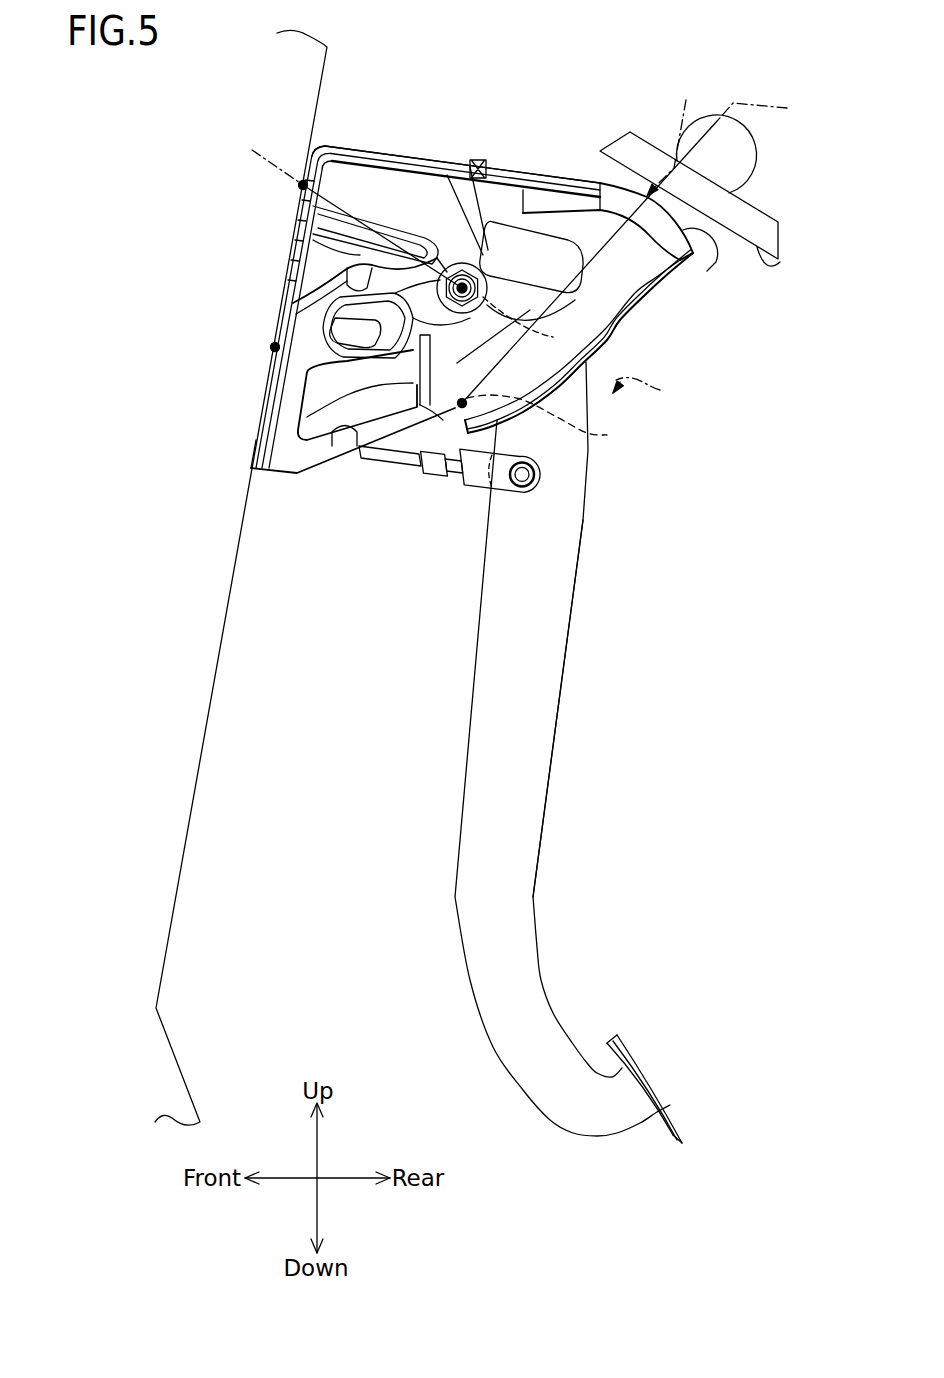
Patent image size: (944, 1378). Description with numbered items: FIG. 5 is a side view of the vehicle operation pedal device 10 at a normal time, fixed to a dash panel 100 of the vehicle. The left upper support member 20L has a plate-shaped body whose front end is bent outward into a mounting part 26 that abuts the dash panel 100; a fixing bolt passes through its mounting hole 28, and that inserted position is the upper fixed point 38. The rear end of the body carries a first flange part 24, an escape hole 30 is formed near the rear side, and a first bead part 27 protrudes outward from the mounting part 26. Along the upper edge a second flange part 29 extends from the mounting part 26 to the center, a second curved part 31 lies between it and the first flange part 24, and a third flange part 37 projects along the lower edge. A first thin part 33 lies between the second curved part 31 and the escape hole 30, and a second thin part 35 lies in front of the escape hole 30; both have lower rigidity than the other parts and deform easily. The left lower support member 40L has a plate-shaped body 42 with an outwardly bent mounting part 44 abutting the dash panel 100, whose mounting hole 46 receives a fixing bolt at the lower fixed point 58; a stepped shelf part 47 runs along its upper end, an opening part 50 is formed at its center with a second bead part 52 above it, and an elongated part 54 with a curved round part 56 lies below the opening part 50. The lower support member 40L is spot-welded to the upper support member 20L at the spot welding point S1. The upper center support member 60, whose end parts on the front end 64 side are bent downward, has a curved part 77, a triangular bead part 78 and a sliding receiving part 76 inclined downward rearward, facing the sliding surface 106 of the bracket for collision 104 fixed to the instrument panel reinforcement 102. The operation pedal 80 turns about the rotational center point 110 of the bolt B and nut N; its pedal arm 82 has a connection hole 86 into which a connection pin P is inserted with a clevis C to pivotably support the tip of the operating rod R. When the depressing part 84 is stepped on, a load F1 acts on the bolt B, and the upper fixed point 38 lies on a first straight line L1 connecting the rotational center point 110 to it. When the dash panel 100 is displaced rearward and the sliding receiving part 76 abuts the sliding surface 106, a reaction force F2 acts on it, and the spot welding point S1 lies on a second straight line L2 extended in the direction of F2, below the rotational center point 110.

The vehicle operation pedal device 10 is at (606, 56).
The upper support member 20L is at (650, 290).
The first flange part 24 is at (660, 333).
The mounting part 26 is at (303, 236).
The first bead part 27 is at (340, 226).
The mounting hole 28 is at (300, 185).
The second flange part 29 is at (396, 155).
The escape hole 30 is at (588, 184).
The second curved part 31 is at (556, 243).
The first thin part 33 is at (496, 222).
The second thin part 35 is at (347, 280).
The third flange part 37 is at (300, 424).
The upper fixed point 38 is at (302, 160).
The lower support member 40L is at (282, 480).
The plate-shaped body 42 is at (335, 300).
The mounting part 44 is at (262, 467).
The mounting hole 46 is at (272, 352).
The shelf part 47 is at (313, 258).
The opening part 50 is at (346, 450).
The second bead part 52 is at (355, 327).
The elongated part 54 is at (432, 478).
The round part 56 is at (385, 470).
The lower fixed point 58 is at (275, 347).
The upper center support member 60 is at (380, 147).
The front end 64 is at (333, 146).
The sliding receiving part 76 is at (692, 236).
The curved part 77 is at (550, 213).
The triangular bead part 78 is at (476, 160).
The operation pedal 80 is at (558, 714).
The pedal arm 82 is at (513, 867).
The depressing part 84 is at (678, 1108).
The connection hole 86 is at (503, 491).
The dash panel 100 is at (170, 930).
The instrument panel reinforcement 102 is at (757, 152).
The bracket for collision 104 is at (757, 203).
The sliding surface 106 is at (780, 268).
The rotational center point 110 is at (590, 334).
The bolt B is at (446, 262).
The clevis C is at (478, 493).
The nut N is at (523, 213).
The connection pin P is at (536, 475).
The operating rod R is at (382, 468).
The spot welding point S1 is at (596, 435).
The load F1 is at (653, 390).
The reaction force F2 is at (674, 135).
The first straight line L1 is at (348, 193).
The second straight line L2 is at (636, 254).